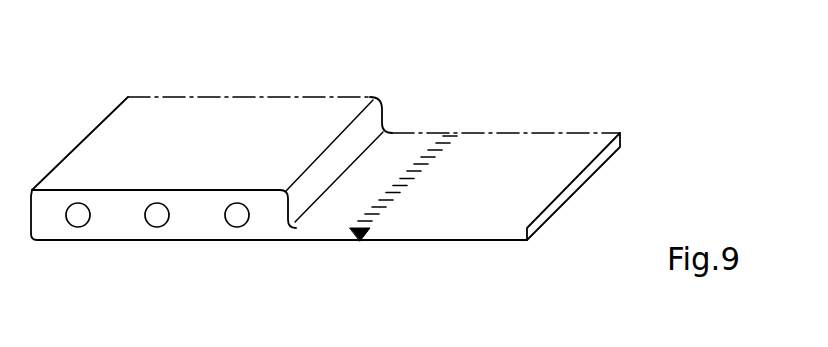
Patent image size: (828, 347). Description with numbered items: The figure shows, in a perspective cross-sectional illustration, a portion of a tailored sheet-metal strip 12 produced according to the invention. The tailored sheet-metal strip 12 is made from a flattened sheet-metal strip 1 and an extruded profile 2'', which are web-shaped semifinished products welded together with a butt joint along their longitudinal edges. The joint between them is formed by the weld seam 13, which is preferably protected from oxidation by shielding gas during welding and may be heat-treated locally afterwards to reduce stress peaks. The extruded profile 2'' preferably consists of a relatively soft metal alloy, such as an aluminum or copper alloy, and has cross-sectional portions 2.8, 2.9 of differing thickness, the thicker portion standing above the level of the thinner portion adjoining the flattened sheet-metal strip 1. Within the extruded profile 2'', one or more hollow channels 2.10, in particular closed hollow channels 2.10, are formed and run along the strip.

The extruded profile 2'' is at (279, 131).
The flattened sheet-metal strip 1 is at (565, 157).
The cross-sectional portion 2.9 is at (327, 110).
The cross-sectional portion 2.8 is at (385, 153).
The tailored sheet-metal strip 12 is at (452, 92).
The weld seam 13 is at (358, 242).
The hollow channel 2.10 is at (237, 218).